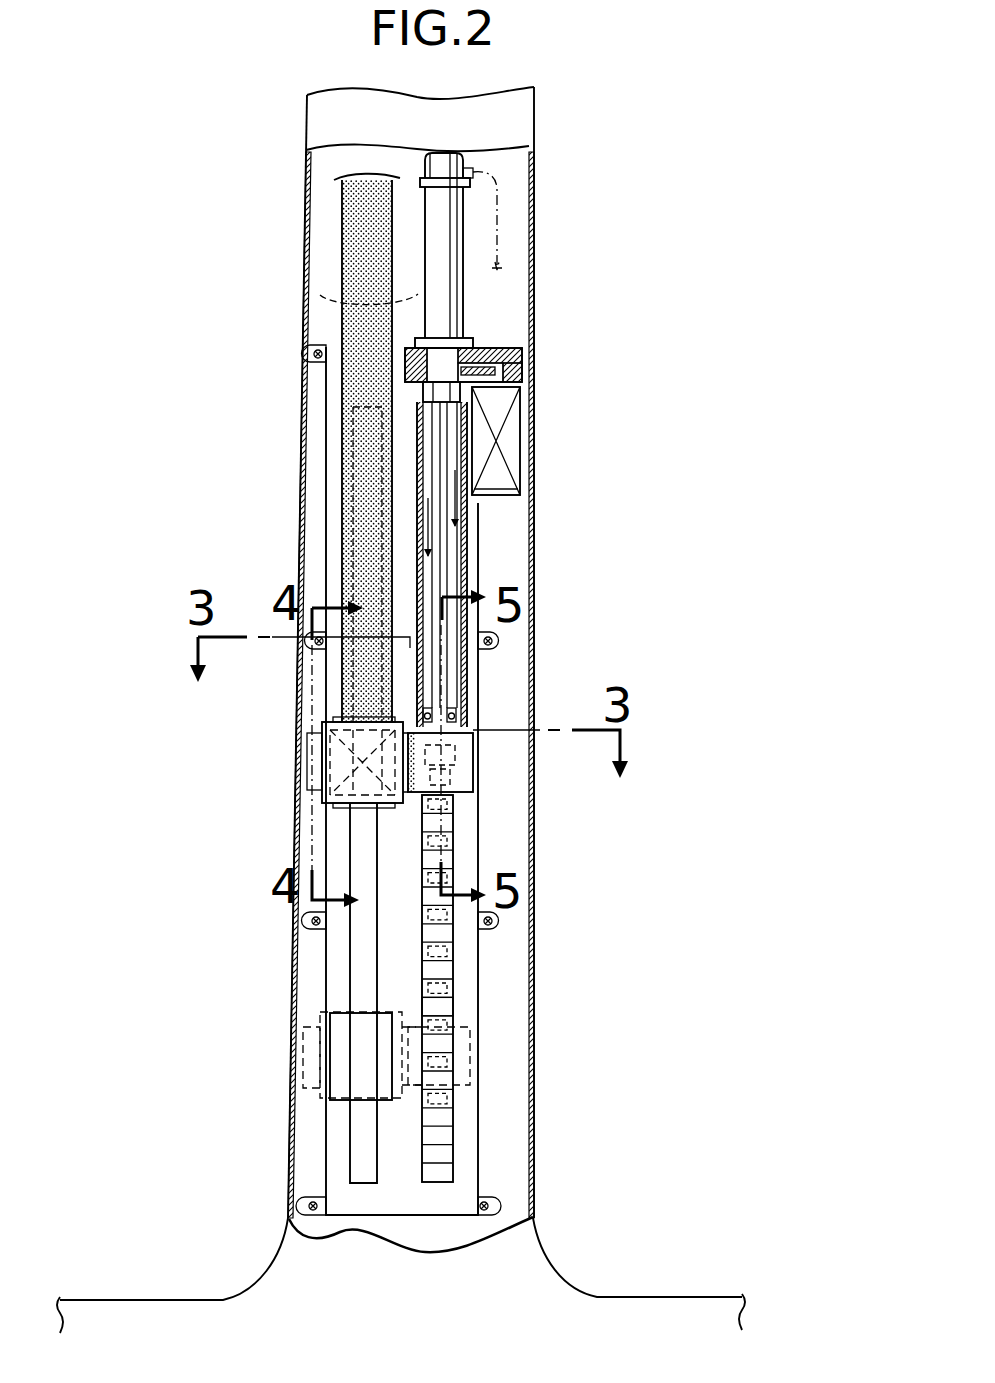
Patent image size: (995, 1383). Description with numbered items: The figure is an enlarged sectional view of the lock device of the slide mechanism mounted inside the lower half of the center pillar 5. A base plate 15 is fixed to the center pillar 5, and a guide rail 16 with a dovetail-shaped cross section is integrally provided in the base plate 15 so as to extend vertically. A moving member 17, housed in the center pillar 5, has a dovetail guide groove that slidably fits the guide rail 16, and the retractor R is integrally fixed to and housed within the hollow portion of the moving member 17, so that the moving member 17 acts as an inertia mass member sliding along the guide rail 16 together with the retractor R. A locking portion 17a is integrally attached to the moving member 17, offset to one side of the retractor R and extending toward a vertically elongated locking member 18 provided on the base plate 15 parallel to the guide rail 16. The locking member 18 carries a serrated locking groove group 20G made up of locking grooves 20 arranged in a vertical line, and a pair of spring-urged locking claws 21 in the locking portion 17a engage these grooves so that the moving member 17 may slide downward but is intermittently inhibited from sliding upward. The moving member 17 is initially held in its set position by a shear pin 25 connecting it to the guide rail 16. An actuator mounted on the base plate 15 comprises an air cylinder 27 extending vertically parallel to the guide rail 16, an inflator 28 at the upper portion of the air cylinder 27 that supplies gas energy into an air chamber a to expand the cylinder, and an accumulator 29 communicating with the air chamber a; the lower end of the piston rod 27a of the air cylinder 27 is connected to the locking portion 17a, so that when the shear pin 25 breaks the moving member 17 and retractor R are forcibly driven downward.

The center pillar 5 is at (306, 283).
The base plate 15 is at (327, 432).
The guide rail 16 is at (350, 473).
The moving member 17 is at (322, 780).
The locking portion 17a is at (471, 778).
The locking member 18 is at (456, 1010).
The locking groove 20 is at (452, 955).
The locking groove group 20G is at (535, 988).
The locking claw 21 is at (480, 770).
The shear pin 25 is at (330, 728).
The air cylinder 27 is at (466, 525).
The piston rod 27a is at (441, 552).
The inflator 28 is at (457, 272).
The accumulator 29 is at (510, 439).
The retractor R is at (317, 745).
The air chamber a is at (445, 382).